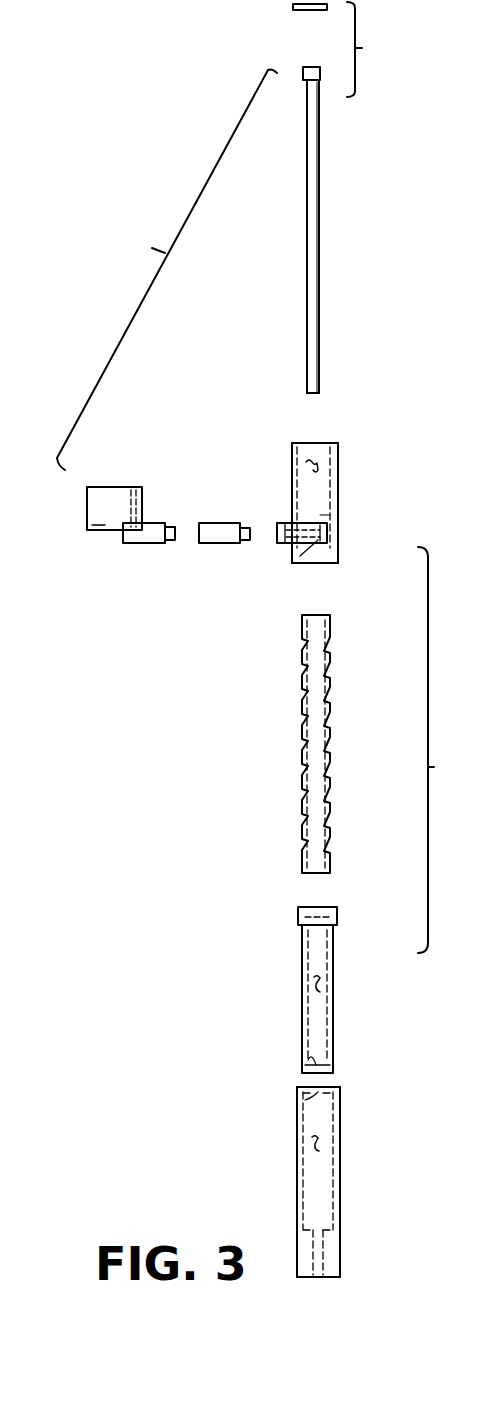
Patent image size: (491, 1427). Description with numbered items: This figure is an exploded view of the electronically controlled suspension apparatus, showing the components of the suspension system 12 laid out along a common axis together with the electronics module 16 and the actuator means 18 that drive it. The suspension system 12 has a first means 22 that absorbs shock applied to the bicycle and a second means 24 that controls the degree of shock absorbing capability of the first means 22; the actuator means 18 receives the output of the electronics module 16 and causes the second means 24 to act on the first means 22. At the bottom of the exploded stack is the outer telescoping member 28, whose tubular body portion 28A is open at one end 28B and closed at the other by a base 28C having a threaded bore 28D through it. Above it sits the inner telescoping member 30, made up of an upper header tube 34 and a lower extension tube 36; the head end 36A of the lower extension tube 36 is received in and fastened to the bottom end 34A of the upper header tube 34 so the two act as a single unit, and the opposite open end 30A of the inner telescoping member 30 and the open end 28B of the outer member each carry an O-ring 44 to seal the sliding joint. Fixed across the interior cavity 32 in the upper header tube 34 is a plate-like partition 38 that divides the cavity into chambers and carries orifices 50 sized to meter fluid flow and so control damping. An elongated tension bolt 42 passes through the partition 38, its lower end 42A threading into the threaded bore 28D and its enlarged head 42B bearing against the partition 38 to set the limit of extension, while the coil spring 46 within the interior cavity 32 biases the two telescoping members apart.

The suspension system 12 is at (435, 763).
The electronics module 16 is at (108, 487).
The actuator means 18 is at (148, 545).
The first means 22 is at (342, 533).
The second means 24 is at (320, 520).
The outer telescoping member 28 is at (347, 1187).
The tubular body portion 28A is at (298, 1165).
The open end 28B is at (330, 1088).
The base 28C is at (333, 1245).
The threaded bore 28D is at (318, 1277).
The inner telescoping member 30 is at (350, 452).
The open end 30A is at (308, 443).
The interior cavity 32 is at (314, 462).
The upper header tube 34 is at (338, 497).
The bottom end 34A is at (312, 563).
The lower extension tube 36 is at (302, 968).
The head end 36A is at (332, 913).
The partition 38 is at (300, 556).
The tension bolt 42 is at (318, 268).
The lower end 42A is at (318, 380).
The enlarged head 42B is at (306, 67).
The O-rings 44 is at (315, 1067).
The coil spring 46 is at (303, 728).
The orifices 50 is at (325, 563).